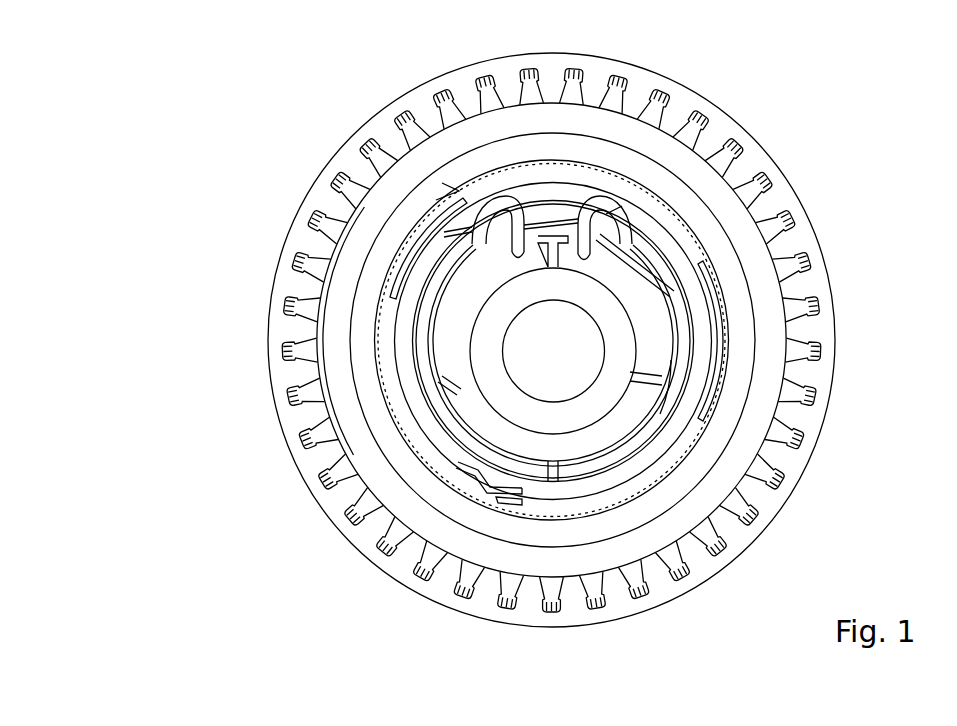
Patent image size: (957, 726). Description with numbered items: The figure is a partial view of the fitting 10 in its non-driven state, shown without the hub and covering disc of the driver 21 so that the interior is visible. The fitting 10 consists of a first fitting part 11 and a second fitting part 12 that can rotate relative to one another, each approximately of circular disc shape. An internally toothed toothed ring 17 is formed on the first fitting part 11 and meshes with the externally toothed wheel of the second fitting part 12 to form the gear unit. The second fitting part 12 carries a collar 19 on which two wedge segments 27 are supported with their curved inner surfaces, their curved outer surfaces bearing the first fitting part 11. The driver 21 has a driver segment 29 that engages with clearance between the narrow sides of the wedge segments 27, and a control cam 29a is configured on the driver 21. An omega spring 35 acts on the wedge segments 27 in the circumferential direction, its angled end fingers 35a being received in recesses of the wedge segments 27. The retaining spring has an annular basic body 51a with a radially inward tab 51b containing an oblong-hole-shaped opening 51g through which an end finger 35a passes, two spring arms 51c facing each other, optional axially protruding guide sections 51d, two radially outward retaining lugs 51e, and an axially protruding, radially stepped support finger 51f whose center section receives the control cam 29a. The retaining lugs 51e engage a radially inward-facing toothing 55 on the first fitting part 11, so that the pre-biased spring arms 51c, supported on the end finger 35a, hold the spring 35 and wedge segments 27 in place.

The fitting 10 is at (256, 100).
The first fitting part 11 is at (816, 228).
The second fitting part 12 is at (573, 312).
The toothed ring 17 is at (783, 490).
The collar 19 is at (612, 390).
The driver 21 is at (457, 424).
The wedge segments 27 is at (490, 258).
The driver segment 29 is at (623, 430).
The control cam 29a is at (503, 477).
The omega spring 35 is at (677, 288).
The end finger 35a is at (518, 235).
The annular basic body 51a is at (408, 312).
The tab 51b is at (576, 203).
The spring arms 51c is at (402, 247).
The guide sections 51d is at (677, 373).
The retaining lugs 51e is at (452, 192).
The support finger 51f is at (500, 480).
The oblong-hole-shaped opening 51g is at (612, 210).
The toothing 55 is at (597, 518).